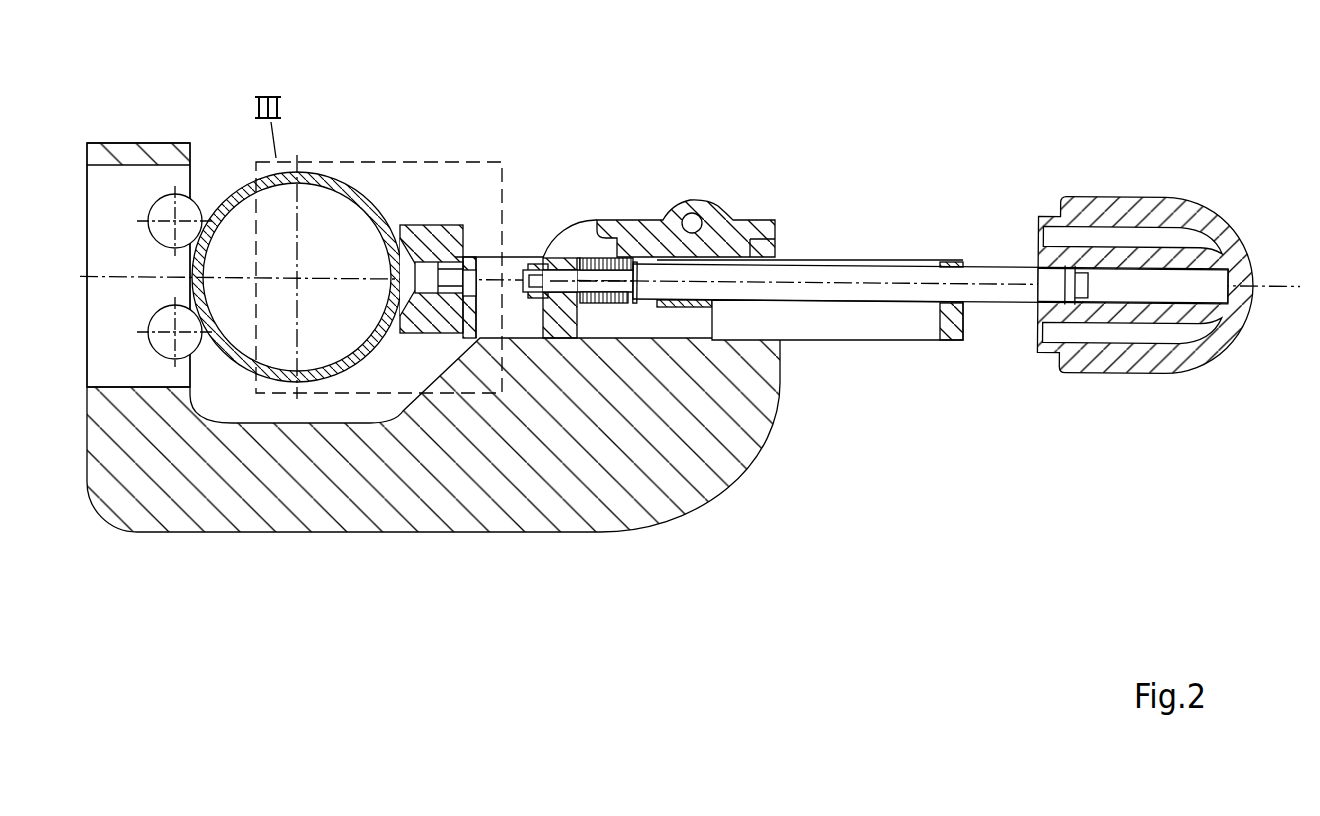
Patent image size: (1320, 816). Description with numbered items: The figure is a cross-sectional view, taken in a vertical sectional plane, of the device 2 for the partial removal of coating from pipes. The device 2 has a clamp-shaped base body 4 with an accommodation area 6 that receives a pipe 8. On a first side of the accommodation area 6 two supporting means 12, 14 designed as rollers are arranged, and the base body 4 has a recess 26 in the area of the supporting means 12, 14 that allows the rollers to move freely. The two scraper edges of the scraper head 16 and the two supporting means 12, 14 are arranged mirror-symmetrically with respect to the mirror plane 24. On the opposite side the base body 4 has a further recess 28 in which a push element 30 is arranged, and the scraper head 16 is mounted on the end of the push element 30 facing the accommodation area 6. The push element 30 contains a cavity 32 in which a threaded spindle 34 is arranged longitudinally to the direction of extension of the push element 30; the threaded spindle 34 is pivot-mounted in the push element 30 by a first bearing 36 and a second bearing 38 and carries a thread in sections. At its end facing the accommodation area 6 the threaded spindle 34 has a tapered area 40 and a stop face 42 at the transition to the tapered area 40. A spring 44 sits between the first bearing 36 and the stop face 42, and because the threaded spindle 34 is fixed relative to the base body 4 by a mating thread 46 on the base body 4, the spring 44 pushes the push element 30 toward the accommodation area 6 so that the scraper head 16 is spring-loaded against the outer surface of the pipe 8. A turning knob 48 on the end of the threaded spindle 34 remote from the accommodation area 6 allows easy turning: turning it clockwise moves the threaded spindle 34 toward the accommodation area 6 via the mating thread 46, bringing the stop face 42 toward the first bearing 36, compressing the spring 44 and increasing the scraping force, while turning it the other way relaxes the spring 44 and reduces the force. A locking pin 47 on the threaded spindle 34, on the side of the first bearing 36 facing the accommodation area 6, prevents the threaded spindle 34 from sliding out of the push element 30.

The device 2 is at (627, 86).
The base body 4 is at (727, 458).
The accommodation area 6 is at (401, 112).
The pipe 8 is at (320, 172).
The supporting means 12 is at (158, 211).
The supporting means 14 is at (158, 342).
The scraper head 16 is at (436, 226).
The mirror plane 24 is at (1293, 280).
The recess 26 is at (80, 254).
The recess 28 is at (786, 242).
The push element 30 is at (918, 328).
The cavity 32 is at (836, 318).
The threaded spindle 34 is at (900, 261).
The first bearing 36 is at (563, 255).
The second bearing 38 is at (953, 262).
The tapered area 40 is at (598, 276).
The stop face 42 is at (619, 300).
The spring 44 is at (623, 258).
The mating thread 46 is at (697, 305).
The locking pin 47 is at (537, 267).
The turning knob 48 is at (1135, 202).